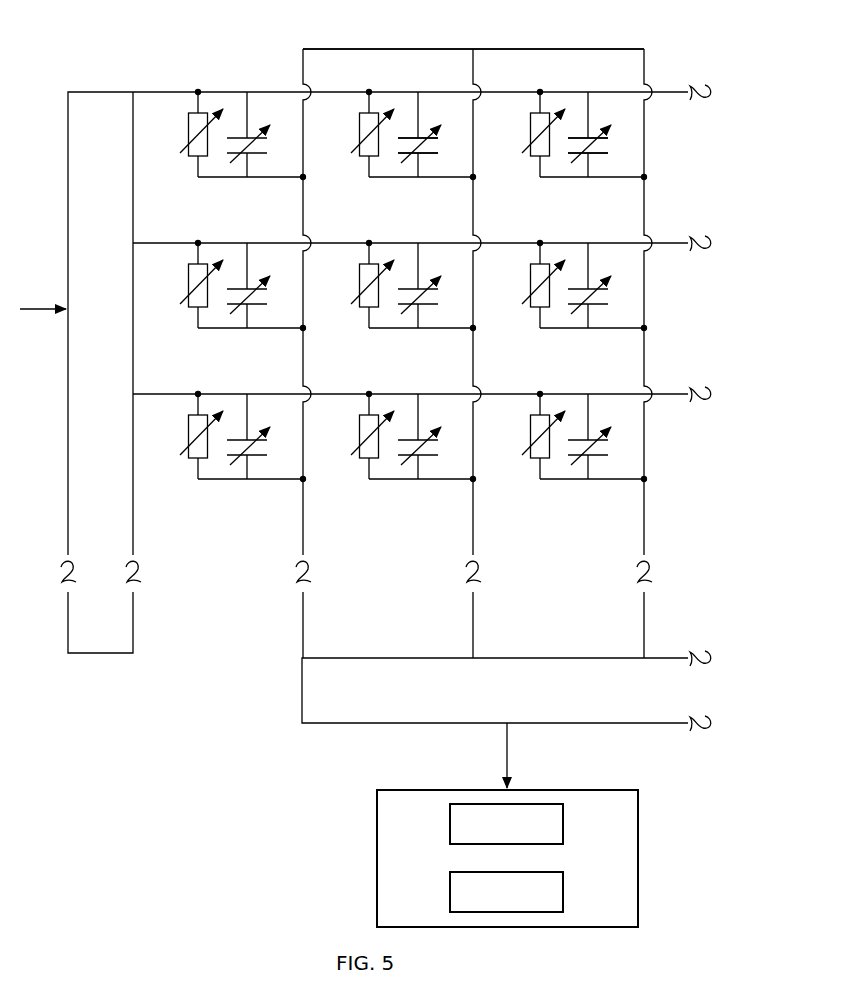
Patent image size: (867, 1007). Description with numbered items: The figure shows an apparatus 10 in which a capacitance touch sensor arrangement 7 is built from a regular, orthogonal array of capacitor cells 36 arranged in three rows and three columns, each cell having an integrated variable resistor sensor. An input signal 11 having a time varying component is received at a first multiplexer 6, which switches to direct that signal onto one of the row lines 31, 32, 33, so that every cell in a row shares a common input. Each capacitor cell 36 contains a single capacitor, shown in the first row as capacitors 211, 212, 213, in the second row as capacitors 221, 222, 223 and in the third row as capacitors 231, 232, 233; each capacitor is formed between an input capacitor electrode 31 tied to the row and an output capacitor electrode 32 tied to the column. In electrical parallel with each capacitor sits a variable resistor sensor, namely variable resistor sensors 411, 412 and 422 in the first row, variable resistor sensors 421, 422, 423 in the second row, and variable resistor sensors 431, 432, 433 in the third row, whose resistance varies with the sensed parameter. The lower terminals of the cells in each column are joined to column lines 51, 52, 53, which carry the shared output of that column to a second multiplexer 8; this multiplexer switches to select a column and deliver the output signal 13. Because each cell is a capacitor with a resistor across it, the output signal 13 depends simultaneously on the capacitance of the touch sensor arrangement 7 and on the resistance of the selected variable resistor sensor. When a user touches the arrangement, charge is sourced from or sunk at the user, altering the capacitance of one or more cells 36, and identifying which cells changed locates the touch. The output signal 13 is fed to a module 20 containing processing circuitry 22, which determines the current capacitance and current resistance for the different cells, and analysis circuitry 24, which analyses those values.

The first selection circuitry 6 is at (92, 655).
The capacitance touch sensor arrangement 7 is at (262, 59).
The second selection circuitry 8 is at (298, 682).
The apparatus 10 is at (673, 47).
The input signal 11 is at (27, 312).
The output signal 13 is at (505, 745).
The module 20 is at (640, 825).
The processing circuitry 22 is at (448, 813).
The analysis circuitry 24 is at (448, 881).
The first capacitor electrode 31 is at (173, 90).
The second capacitor electrode 32 is at (176, 242).
The third row line 33 is at (182, 393).
The capacitor cell 36 is at (233, 184).
The first column output line 51 is at (304, 210).
The second column output line 52 is at (474, 217).
The third column output line 53 is at (645, 224).
The capacitor 211 is at (260, 131).
The capacitor 212 is at (397, 139).
The capacitor 213 is at (567, 139).
The capacitor 221 is at (260, 282).
The capacitor 222 is at (431, 282).
The capacitor 223 is at (601, 282).
The capacitor 231 is at (260, 433).
The capacitor 232 is at (431, 433).
The capacitor 233 is at (601, 433).
The variable resistor sensor 411 is at (188, 131).
The variable resistor sensor 412 is at (359, 131).
The variable resistor sensor 421 is at (188, 282).
The variable resistor sensor 422 is at (530, 131).
The variable resistor sensor 423 is at (530, 282).
The variable resistor sensor 431 is at (188, 433).
The variable resistor sensor 432 is at (359, 433).
The variable resistor sensor 433 is at (530, 433).